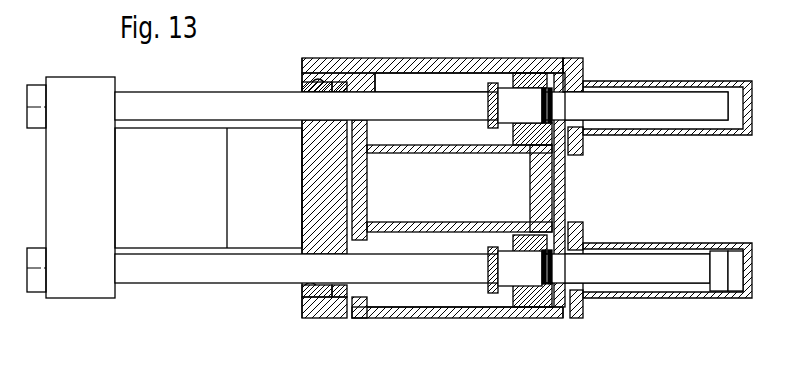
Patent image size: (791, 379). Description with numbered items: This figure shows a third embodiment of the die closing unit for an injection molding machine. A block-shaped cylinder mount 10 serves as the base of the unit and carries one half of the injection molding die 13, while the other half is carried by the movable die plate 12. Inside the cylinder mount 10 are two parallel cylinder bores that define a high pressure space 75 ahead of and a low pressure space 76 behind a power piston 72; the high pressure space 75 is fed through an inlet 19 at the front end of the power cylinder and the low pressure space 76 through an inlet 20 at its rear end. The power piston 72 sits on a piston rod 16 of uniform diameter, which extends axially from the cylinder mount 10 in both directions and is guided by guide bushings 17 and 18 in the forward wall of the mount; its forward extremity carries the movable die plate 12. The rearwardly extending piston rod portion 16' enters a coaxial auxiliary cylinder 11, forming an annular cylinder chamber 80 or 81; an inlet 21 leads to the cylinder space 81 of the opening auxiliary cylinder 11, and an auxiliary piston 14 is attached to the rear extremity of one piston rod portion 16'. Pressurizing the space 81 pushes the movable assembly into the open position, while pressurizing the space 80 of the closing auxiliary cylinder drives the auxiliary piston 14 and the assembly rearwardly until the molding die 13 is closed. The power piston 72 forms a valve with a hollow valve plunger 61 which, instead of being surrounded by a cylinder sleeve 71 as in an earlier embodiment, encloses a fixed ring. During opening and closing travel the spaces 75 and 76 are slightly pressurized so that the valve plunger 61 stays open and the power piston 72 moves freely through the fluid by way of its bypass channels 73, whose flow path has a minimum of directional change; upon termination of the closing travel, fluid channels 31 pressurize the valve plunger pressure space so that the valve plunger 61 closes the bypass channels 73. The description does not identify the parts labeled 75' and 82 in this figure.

The cylinder mount 10 is at (312, 170).
The auxiliary cylinder 11 is at (578, 227).
The movable die plate 12 is at (63, 217).
The injection molding die 13 is at (197, 230).
The auxiliary piston 14 is at (718, 277).
The piston rod 16 is at (421, 213).
The rearwardly extending piston rod portion 16' is at (637, 236).
The guide bushing 17 is at (310, 80).
The guide bushing 18 is at (300, 287).
The inlet 19 is at (350, 208).
The inlet 20 is at (553, 203).
The inlet 21 is at (573, 58).
The fluid channel 31 is at (68, 105).
The hollow valve plunger 61 is at (508, 305).
The cylinder sleeve 71 is at (490, 288).
The power piston 72 is at (542, 313).
The bypass channel 73 is at (535, 67).
The high pressure cylinder space 75 is at (432, 47).
The cover block 75' is at (338, 54).
The low pressure cylinder space 76 is at (532, 167).
The cylinder space of closing auxiliary cylinder 80 is at (655, 287).
The cylinder space of opening auxiliary cylinder 81 is at (735, 105).
The piston head 82 is at (735, 262).